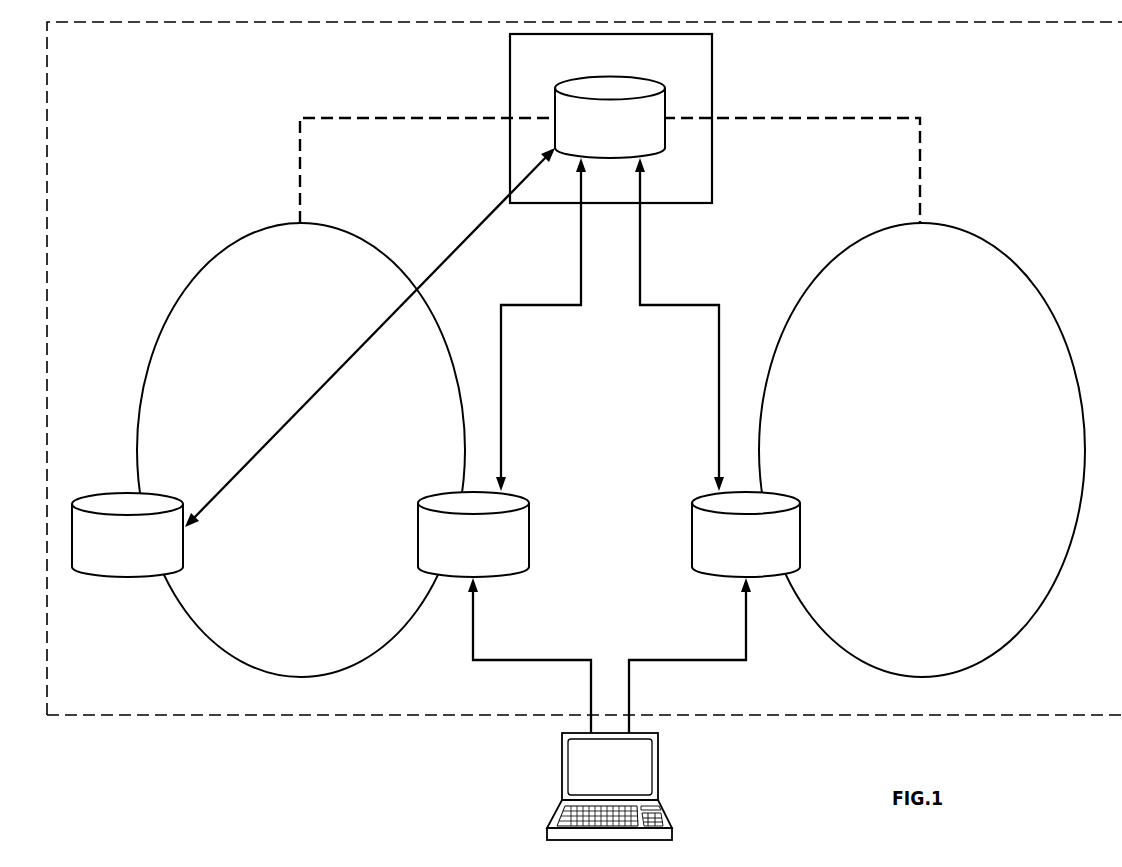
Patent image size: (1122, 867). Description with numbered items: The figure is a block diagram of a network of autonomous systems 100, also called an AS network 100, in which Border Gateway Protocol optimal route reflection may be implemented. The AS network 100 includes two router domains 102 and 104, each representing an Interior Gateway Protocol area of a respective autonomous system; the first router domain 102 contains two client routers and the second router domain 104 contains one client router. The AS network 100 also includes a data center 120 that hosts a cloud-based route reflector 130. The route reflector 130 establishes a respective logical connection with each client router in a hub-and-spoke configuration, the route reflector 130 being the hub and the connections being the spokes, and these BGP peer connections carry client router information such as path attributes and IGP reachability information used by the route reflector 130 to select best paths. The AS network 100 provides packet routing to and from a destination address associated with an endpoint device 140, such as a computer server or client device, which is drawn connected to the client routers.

The autonomous system network 100 is at (110, 716).
The router domain 102 is at (190, 283).
The router domain 104 is at (1024, 273).
The data center 120 is at (713, 87).
The route reflector 130 is at (665, 134).
The endpoint device 140 is at (562, 755).